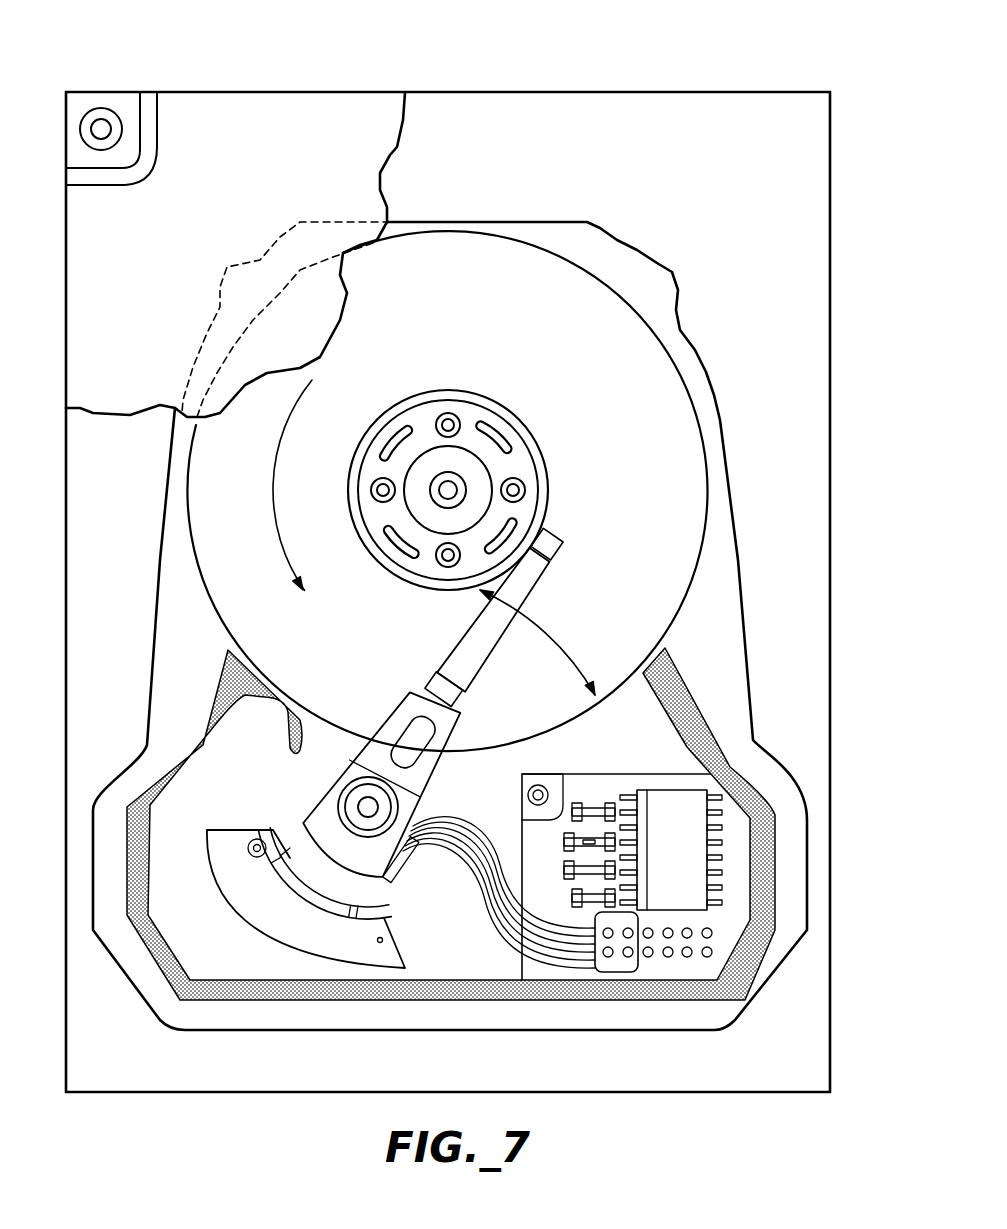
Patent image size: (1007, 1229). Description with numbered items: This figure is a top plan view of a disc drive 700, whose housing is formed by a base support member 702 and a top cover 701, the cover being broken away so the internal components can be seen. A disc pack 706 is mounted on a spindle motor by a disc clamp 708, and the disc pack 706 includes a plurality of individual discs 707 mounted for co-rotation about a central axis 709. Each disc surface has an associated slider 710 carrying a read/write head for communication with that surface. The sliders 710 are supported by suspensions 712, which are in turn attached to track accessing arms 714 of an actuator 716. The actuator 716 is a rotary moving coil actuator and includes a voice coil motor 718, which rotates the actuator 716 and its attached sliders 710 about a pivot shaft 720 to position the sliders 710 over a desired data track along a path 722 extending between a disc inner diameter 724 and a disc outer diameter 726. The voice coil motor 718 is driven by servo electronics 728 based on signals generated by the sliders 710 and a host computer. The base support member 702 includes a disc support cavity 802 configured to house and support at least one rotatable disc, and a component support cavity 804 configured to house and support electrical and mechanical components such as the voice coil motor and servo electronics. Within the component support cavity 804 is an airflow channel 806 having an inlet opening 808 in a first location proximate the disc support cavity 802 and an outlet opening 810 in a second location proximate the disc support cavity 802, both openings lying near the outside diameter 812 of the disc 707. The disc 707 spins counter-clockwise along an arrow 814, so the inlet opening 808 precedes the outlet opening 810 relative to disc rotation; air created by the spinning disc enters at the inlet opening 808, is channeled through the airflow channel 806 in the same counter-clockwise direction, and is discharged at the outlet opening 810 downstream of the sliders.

The disc drive 700 is at (660, 47).
The top cover 701 is at (205, 130).
The base support member 702 is at (725, 120).
The disc pack 706 is at (548, 338).
The disc 707 is at (505, 240).
The disc clamp 708 is at (425, 425).
The central axis 709 is at (455, 480).
The slider 710 is at (560, 540).
The suspension 712 is at (492, 660).
The track accessing arm 714 is at (460, 740).
The actuator 716 is at (345, 782).
The voice coil motor 718 is at (245, 873).
The pivot shaft 720 is at (370, 818).
The path 722 is at (568, 640).
The disc inner diameter 724 is at (545, 440).
The disc outer diameter 726 is at (690, 610).
The servo electronics 728 is at (655, 962).
The disc support cavity 802 is at (680, 355).
The component support cavity 804 is at (753, 770).
The airflow channel 806 is at (146, 975).
The inlet opening 808 is at (181, 633).
The outlet opening 810 is at (724, 703).
The outside diameter 812 is at (185, 517).
The arrow 814 is at (270, 483).